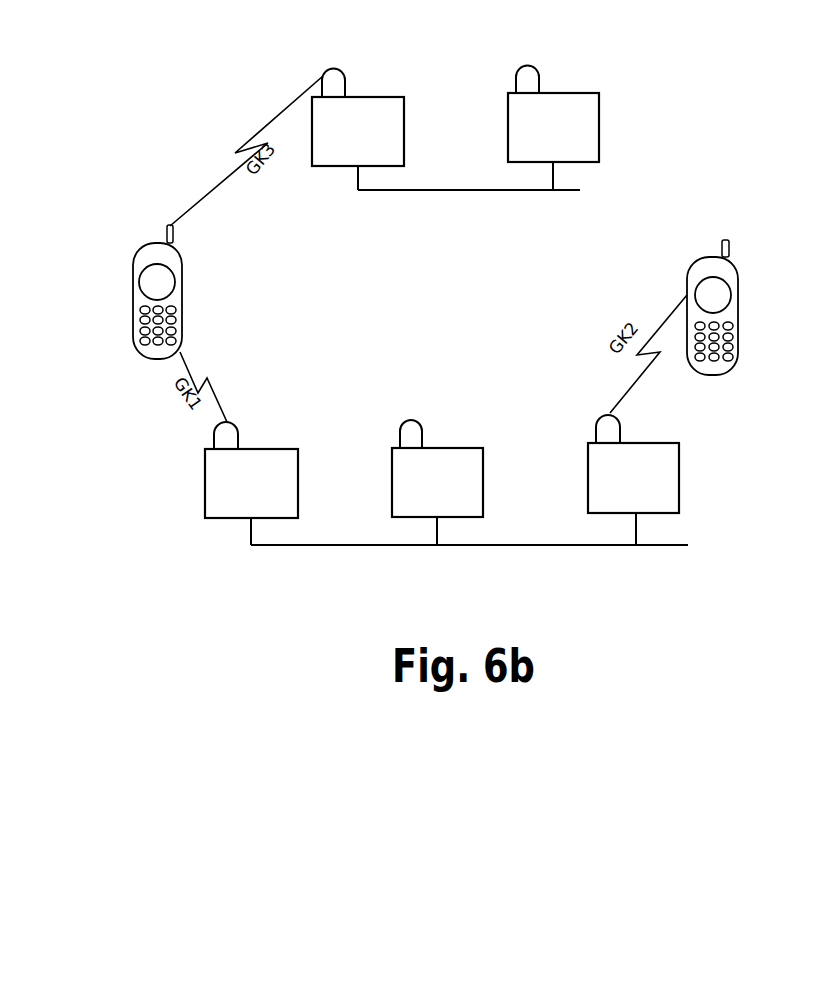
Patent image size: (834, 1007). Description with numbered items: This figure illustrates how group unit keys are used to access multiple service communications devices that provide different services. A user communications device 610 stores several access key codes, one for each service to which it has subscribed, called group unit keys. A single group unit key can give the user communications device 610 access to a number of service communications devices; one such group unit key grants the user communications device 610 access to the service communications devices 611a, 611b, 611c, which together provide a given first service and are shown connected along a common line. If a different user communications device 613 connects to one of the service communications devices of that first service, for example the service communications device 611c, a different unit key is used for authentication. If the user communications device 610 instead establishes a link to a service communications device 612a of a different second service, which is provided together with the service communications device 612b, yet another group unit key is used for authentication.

The user communications device 610 is at (133, 275).
The service communications device 611a is at (257, 440).
The service communications device 611b is at (436, 443).
The service communications device 611c is at (636, 440).
The service communications device 612a is at (358, 95).
The service communications device 612b is at (602, 124).
The user communications device 613 is at (740, 315).